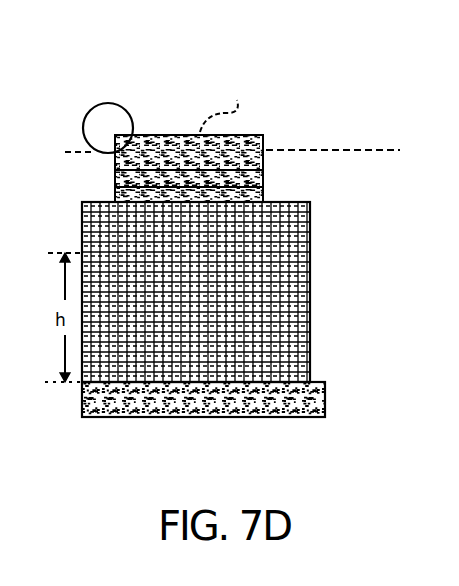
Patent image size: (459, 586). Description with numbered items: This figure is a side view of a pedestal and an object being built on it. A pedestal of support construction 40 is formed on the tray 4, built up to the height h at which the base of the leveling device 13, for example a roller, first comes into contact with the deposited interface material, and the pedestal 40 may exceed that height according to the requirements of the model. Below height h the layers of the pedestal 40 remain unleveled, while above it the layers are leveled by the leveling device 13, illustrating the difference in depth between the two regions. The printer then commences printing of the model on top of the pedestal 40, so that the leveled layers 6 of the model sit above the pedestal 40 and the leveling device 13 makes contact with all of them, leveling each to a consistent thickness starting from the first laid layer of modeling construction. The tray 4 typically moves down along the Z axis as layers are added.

The leveling device 13 is at (87, 105).
The leveled layers 6 is at (263, 136).
The pedestal 40 is at (326, 202).
The tray 4 is at (325, 416).